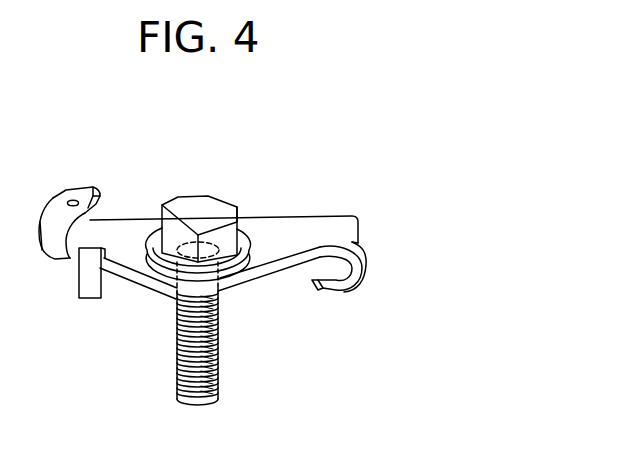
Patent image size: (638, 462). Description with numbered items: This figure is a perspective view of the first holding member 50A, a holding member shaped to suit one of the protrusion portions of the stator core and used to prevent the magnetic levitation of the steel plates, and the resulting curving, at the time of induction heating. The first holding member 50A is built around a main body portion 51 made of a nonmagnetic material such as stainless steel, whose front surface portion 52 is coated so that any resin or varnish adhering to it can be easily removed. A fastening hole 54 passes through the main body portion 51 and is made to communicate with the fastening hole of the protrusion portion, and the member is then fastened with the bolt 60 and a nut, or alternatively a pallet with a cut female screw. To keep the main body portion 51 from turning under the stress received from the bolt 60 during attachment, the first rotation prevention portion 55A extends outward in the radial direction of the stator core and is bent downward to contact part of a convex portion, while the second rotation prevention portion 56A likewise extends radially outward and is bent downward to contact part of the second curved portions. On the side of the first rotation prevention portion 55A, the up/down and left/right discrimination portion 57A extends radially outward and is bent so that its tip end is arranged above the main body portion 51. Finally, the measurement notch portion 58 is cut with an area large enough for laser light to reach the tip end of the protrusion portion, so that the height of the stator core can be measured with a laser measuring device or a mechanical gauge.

The first holding member 50A is at (357, 172).
The main body portion 51 is at (288, 212).
The front surface portion 52 is at (123, 237).
The fastening hole 54 is at (177, 243).
The first rotation prevention portion 55A is at (90, 299).
The second rotation prevention portion 56A is at (351, 279).
The up/down and left/right discrimination portion 57A is at (74, 190).
The measurement notch portion 58 is at (207, 292).
The bolt 60 is at (226, 200).